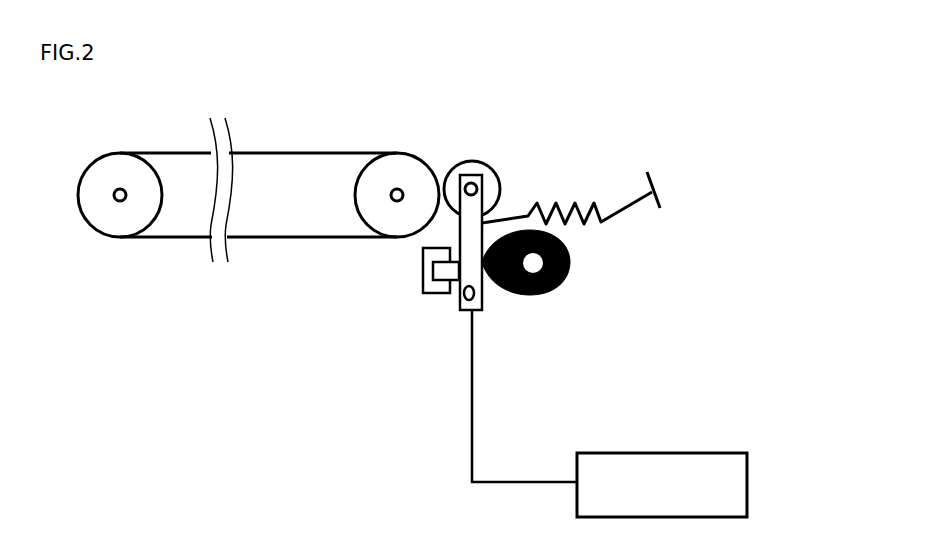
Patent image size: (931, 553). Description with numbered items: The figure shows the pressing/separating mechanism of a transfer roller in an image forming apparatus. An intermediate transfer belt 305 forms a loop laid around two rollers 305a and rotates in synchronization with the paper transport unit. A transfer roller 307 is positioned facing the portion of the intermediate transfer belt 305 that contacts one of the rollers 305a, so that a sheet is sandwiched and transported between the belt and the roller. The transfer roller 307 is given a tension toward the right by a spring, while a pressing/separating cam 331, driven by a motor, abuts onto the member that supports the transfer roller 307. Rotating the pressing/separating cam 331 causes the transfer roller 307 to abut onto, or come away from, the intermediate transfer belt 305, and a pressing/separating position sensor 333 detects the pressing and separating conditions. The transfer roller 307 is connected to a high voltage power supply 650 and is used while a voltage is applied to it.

The intermediate transfer belt 305 is at (330, 152).
The rollers 305a is at (105, 163).
The transfer roller 307 is at (478, 166).
The pressing/separating cam 331 is at (573, 263).
The pressing/separating position sensor 333 is at (423, 284).
The high voltage power supply 650 is at (664, 455).